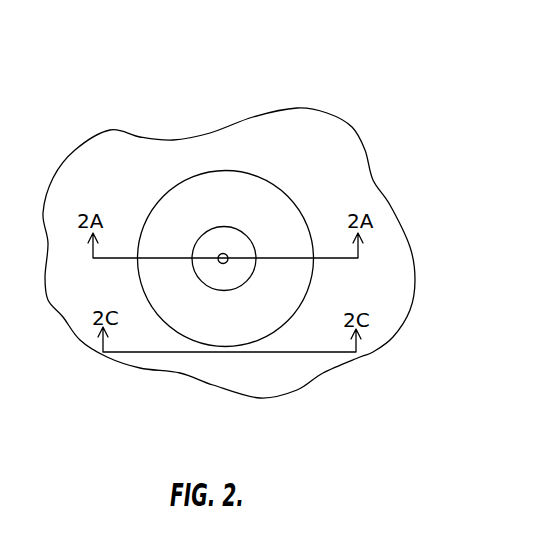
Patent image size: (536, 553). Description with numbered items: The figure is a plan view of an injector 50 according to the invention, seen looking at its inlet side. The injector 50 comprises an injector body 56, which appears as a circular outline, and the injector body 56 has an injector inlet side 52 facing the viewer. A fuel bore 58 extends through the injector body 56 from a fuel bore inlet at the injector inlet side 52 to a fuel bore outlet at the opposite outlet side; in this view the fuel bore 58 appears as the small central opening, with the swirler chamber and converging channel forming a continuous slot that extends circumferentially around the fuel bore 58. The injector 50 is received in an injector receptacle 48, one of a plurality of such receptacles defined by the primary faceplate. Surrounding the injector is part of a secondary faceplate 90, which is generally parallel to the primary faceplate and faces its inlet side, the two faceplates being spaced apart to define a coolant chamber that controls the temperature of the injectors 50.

The secondary faceplate 90 is at (325, 165).
The injector 50 is at (250, 177).
The injector body 56 is at (285, 296).
The fuel bore 58 is at (223, 253).
The injector inlet side 52 is at (208, 245).
The injector receptacle 48 is at (290, 318).